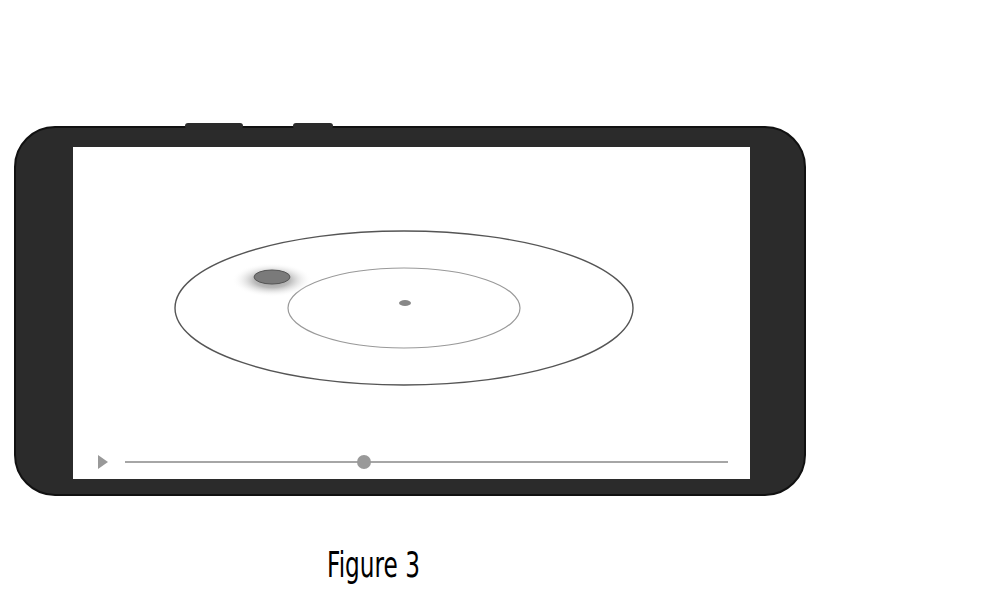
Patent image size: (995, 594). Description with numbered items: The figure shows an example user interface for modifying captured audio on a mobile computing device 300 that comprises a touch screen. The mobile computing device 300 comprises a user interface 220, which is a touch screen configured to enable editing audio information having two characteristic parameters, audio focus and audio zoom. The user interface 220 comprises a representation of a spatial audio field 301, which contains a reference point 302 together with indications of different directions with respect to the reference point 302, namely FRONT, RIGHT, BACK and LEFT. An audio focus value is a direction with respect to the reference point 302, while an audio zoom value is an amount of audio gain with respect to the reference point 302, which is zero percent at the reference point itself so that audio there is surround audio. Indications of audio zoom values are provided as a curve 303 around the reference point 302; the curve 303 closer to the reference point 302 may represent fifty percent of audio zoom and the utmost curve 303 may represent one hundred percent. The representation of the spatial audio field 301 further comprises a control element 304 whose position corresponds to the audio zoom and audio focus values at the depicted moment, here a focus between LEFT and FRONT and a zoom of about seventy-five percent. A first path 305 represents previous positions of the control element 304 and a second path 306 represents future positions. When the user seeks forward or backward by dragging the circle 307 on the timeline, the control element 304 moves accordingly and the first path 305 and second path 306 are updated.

The mobile computing device 300 is at (613, 85).
The user interface 220 is at (120, 185).
The representation of a spatial audio field 301 is at (592, 325).
The reference point 302 is at (412, 302).
The curve 303 is at (503, 282).
The control element 304 is at (262, 278).
The first path 305 is at (193, 302).
The second path 306 is at (328, 262).
The circle 307 is at (364, 460).